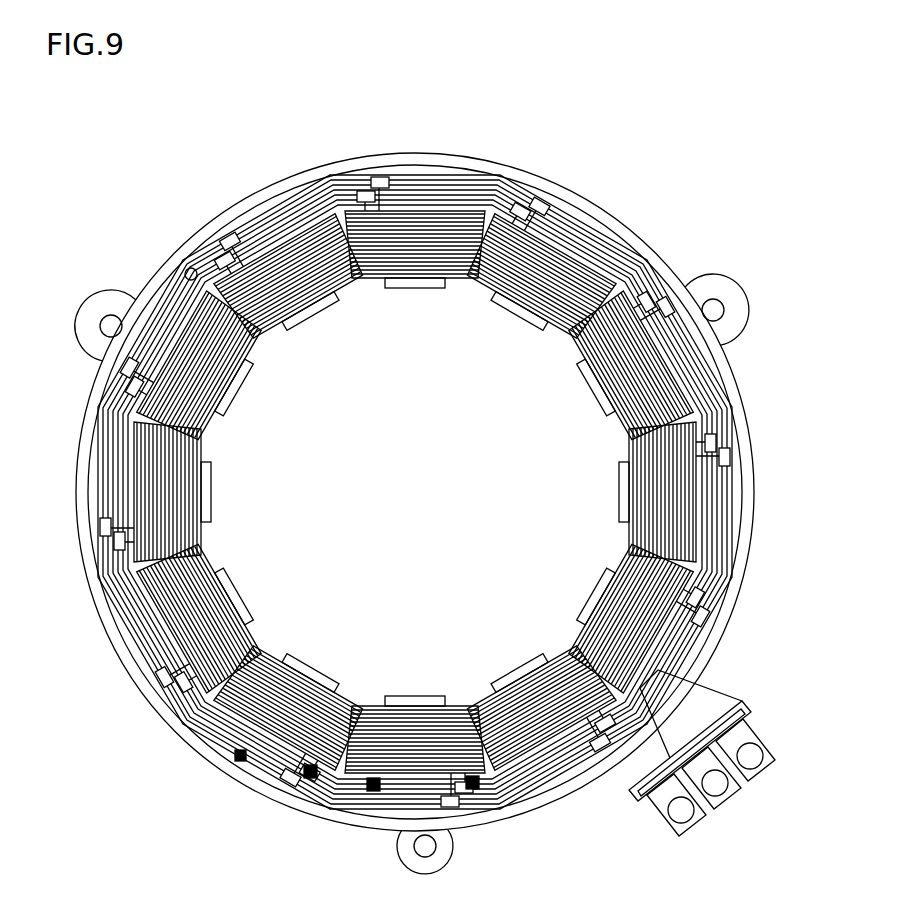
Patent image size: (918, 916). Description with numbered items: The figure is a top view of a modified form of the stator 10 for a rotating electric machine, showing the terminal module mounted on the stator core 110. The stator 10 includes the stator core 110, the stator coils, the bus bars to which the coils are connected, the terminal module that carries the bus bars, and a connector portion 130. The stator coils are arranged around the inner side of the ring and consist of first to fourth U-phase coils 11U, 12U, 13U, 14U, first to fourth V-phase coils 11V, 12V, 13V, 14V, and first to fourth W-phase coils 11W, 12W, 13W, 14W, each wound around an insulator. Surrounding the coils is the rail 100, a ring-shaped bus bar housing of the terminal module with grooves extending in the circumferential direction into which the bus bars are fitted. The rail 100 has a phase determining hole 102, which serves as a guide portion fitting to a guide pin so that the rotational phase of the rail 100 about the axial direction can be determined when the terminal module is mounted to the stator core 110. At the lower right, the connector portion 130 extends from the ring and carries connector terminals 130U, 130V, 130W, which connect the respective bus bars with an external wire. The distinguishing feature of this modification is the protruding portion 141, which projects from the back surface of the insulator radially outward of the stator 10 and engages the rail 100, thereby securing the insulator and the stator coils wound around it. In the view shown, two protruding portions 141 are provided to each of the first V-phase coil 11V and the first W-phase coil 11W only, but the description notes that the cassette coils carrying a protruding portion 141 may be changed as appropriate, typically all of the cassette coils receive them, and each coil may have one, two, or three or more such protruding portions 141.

The stator 10 is at (572, 120).
The rail 100 is at (100, 392).
The phase determining hole 102 is at (178, 262).
The stator core 110 is at (205, 213).
The first U-phase coil 11U is at (517, 663).
The first V-phase coil 11V is at (409, 694).
The first W-phase coil 11W is at (306, 663).
The second U-phase coil 12U is at (227, 587).
The second V-phase coil 12V is at (201, 490).
The second W-phase coil 12W is at (228, 384).
The third U-phase coil 13U is at (300, 308).
The third V-phase coil 13V is at (406, 278).
The third W-phase coil 13W is at (512, 306).
The fourth U-phase coil 14U is at (590, 383).
The fourth V-phase coil 14V is at (617, 488).
The fourth W-phase coil 14W is at (590, 583).
The connector portion 130 is at (726, 793).
The U-phase connector terminal 130U is at (768, 808).
The V-phase connector terminal 130V is at (672, 818).
The W-phase connector terminal 130W is at (708, 790).
The protruding portion 141 is at (233, 762).